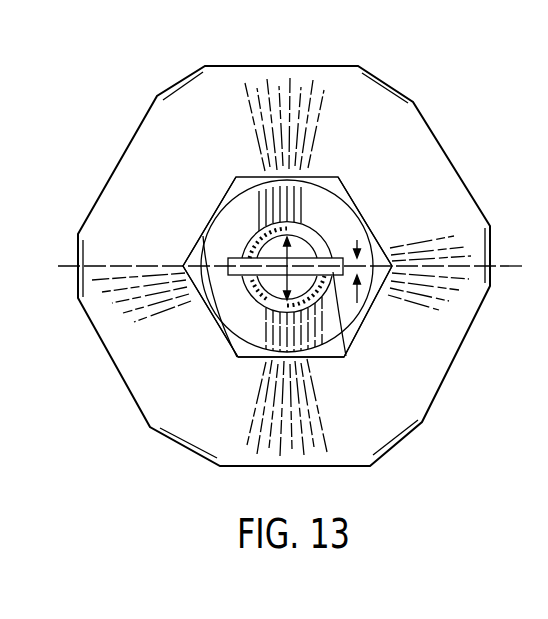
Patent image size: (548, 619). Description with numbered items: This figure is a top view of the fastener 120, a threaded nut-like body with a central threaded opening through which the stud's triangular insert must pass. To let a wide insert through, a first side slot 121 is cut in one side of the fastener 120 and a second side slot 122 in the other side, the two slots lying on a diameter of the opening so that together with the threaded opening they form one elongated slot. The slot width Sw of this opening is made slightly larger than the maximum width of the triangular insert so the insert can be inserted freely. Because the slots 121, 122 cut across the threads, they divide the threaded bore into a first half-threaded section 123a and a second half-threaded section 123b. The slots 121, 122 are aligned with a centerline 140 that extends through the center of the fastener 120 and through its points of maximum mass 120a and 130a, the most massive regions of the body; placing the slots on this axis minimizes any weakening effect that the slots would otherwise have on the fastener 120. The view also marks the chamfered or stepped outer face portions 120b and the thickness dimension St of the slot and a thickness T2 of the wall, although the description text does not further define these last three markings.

The fastener 120 is at (284, 236).
The point of maximum mass 120a is at (74, 252).
The chamfered faces of nut 120b is at (242, 264).
The first side slot 121 is at (307, 295).
The second side slot 122 is at (248, 298).
The first half-threaded section 123a is at (344, 357).
The second half-threaded section 123b is at (262, 300).
The point of maximum mass 130a is at (183, 267).
The centerline 140 is at (508, 270).
The slot width Sw is at (228, 258).
The slot thickness St is at (360, 297).
The wall thickness T2 is at (237, 358).